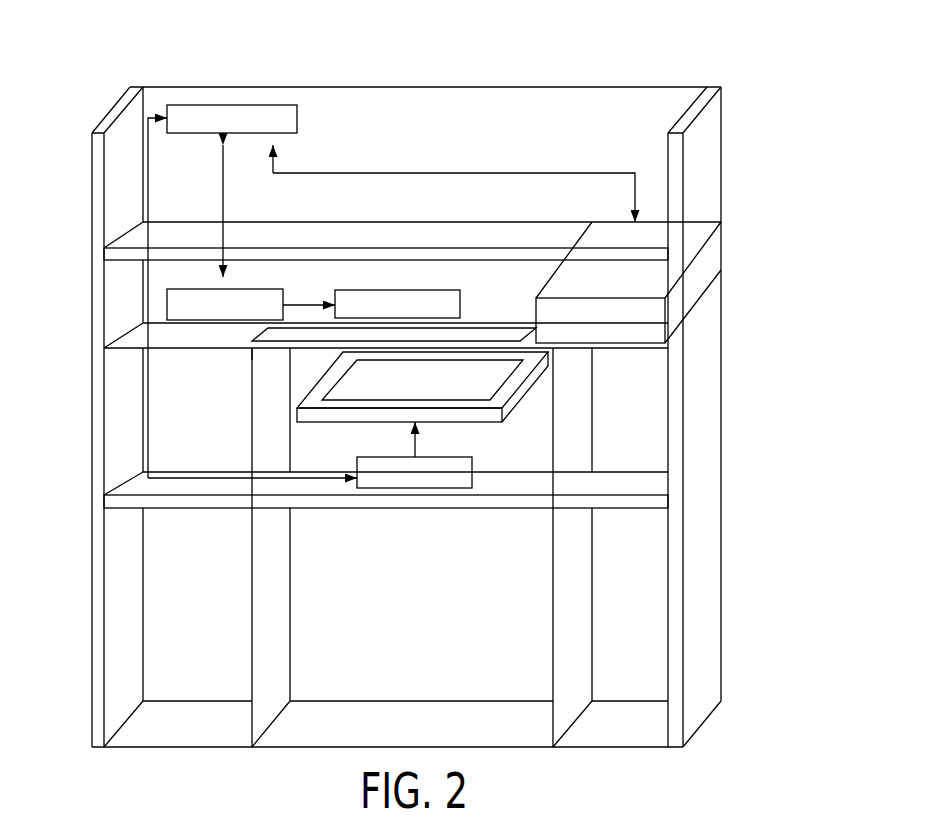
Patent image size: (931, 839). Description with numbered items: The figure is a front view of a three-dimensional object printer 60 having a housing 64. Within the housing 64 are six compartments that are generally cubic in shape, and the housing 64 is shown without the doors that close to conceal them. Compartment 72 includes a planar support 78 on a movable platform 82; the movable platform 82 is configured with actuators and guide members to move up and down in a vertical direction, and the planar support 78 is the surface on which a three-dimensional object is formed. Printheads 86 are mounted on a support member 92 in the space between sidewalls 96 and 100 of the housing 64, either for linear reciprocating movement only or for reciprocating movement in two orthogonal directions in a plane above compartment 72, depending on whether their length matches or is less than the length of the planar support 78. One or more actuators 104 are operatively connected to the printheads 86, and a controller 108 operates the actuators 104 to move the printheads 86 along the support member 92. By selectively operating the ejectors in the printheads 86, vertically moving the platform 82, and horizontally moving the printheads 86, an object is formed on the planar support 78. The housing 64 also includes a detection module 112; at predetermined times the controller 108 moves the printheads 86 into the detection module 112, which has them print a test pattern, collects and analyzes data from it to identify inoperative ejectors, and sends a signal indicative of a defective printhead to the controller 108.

The printer 60 is at (152, 75).
The housing 64 is at (705, 340).
The compartment 72 is at (315, 448).
The planar support 78 is at (433, 394).
The movable platform 82 is at (522, 397).
The printheads 86 is at (460, 296).
The support member 92 is at (183, 348).
The sidewall 96 is at (92, 213).
The sidewall 100 is at (722, 108).
The actuators 104 is at (287, 297).
The controller 108 is at (297, 118).
The detection module 112 is at (707, 273).